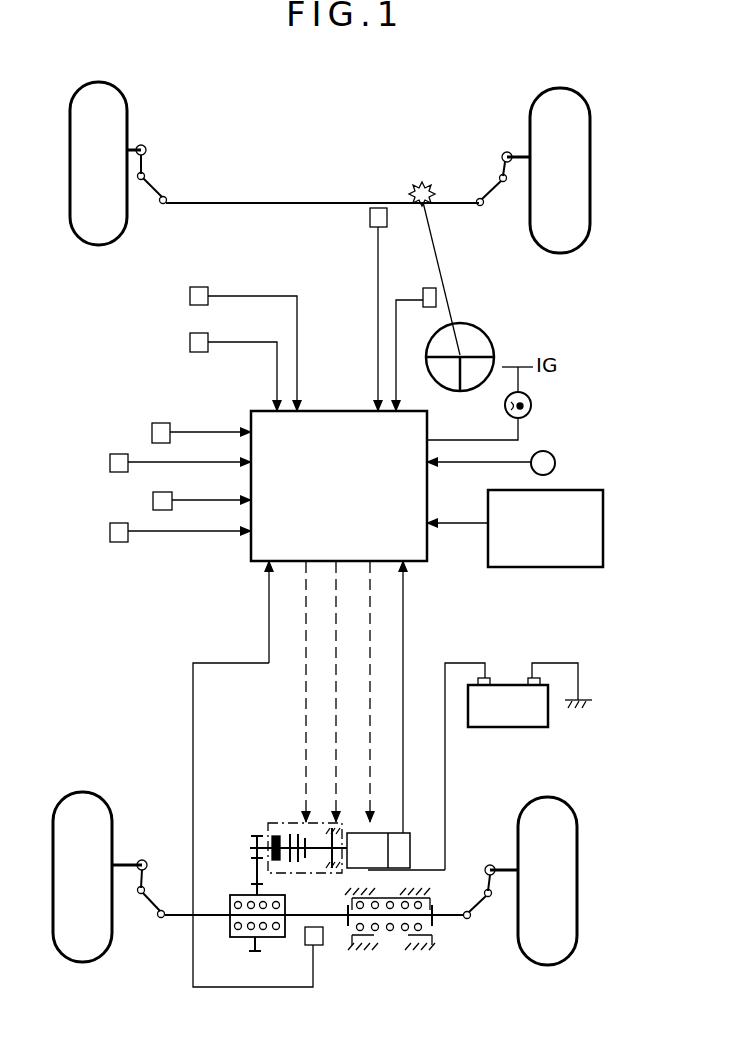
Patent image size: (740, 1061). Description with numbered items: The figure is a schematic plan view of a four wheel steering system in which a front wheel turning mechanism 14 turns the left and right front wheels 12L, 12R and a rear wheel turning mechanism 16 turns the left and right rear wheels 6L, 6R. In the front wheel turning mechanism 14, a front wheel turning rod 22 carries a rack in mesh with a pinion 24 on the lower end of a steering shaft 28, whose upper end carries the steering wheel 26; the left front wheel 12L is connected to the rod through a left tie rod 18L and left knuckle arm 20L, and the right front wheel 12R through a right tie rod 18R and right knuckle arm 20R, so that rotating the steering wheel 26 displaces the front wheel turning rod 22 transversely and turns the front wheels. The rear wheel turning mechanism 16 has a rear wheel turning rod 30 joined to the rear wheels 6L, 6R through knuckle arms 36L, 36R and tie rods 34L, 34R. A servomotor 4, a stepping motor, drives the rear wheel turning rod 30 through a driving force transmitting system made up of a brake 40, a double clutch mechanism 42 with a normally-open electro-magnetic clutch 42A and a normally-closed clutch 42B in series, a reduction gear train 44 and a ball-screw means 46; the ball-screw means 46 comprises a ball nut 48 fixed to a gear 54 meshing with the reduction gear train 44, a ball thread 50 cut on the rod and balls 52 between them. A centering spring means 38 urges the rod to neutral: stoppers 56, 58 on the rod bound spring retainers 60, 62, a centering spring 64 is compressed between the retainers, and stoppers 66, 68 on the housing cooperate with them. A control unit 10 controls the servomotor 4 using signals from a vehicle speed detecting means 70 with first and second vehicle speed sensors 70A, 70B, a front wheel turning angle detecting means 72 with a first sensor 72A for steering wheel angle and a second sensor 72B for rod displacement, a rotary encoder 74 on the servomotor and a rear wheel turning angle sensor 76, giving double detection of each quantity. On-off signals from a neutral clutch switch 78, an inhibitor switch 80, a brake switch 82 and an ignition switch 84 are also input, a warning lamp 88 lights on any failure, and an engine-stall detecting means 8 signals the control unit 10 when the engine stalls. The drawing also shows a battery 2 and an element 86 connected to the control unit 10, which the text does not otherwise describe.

The battery 2 is at (548, 706).
The servomotor 4 is at (382, 832).
The left rear wheel 6L is at (98, 794).
The right rear wheel 6R is at (578, 826).
The engine-stall detecting means 8 is at (603, 503).
The control unit 10 is at (427, 545).
The left front wheel 12L is at (128, 108).
The right front wheel 12R is at (590, 112).
The front wheel turning mechanism 14 is at (358, 170).
The rear wheel turning mechanism 16 is at (447, 620).
The left tie rod 18L is at (152, 185).
The right tie rod 18R is at (494, 195).
The left knuckle arm 20L is at (148, 156).
The right knuckle arm 20R is at (501, 160).
The front wheel turning rod 22 is at (275, 200).
The pinion 24 is at (422, 181).
The steering wheel 26 is at (492, 335).
The steering shaft 28 is at (436, 292).
The rear wheel turning rod 30 is at (450, 912).
The tie rod 34L is at (143, 896).
The tie rod 34R is at (480, 908).
The knuckle arm 36L is at (150, 858).
The knuckle arm 36R is at (485, 866).
The centering spring means 38 is at (394, 952).
The brake 40 is at (345, 820).
The double clutch mechanism 42 is at (272, 818).
The electro-magnetic clutch 42A is at (296, 833).
The electro-magnetic clutch 42B is at (285, 833).
The reduction gear train 44 is at (252, 846).
The ball-screw means 46 is at (222, 880).
The ball nut 48 is at (230, 902).
The ball thread 50 is at (230, 920).
The balls 52 is at (240, 938).
The gear 54 is at (255, 947).
The stopper 56 is at (346, 920).
The stopper 58 is at (432, 926).
The spring retainer 60 is at (362, 948).
The spring retainer 62 is at (418, 946).
The centering spring 64 is at (388, 936).
The stopper 66 is at (352, 946).
The stopper 68 is at (422, 946).
The vehicle speed detecting means 70 is at (120, 284).
The first vehicle speed sensor 70A is at (190, 296).
The second vehicle speed sensor 70B is at (190, 342).
The front wheel turning angle detecting means 72 is at (298, 214).
The first front wheel turning angle sensor 72A is at (421, 295).
The second front wheel turning angle sensor 72B is at (370, 220).
The rotary encoder 74 is at (412, 846).
The rear wheel turning angle sensor 76 is at (305, 937).
The neutral clutch switch 78 is at (148, 424).
The inhibitor switch 80 is at (110, 456).
The brake switch 82 is at (153, 500).
The ignition switch 84 is at (120, 543).
The warning lamp 86 is at (556, 462).
The warning lamp 88 is at (533, 405).